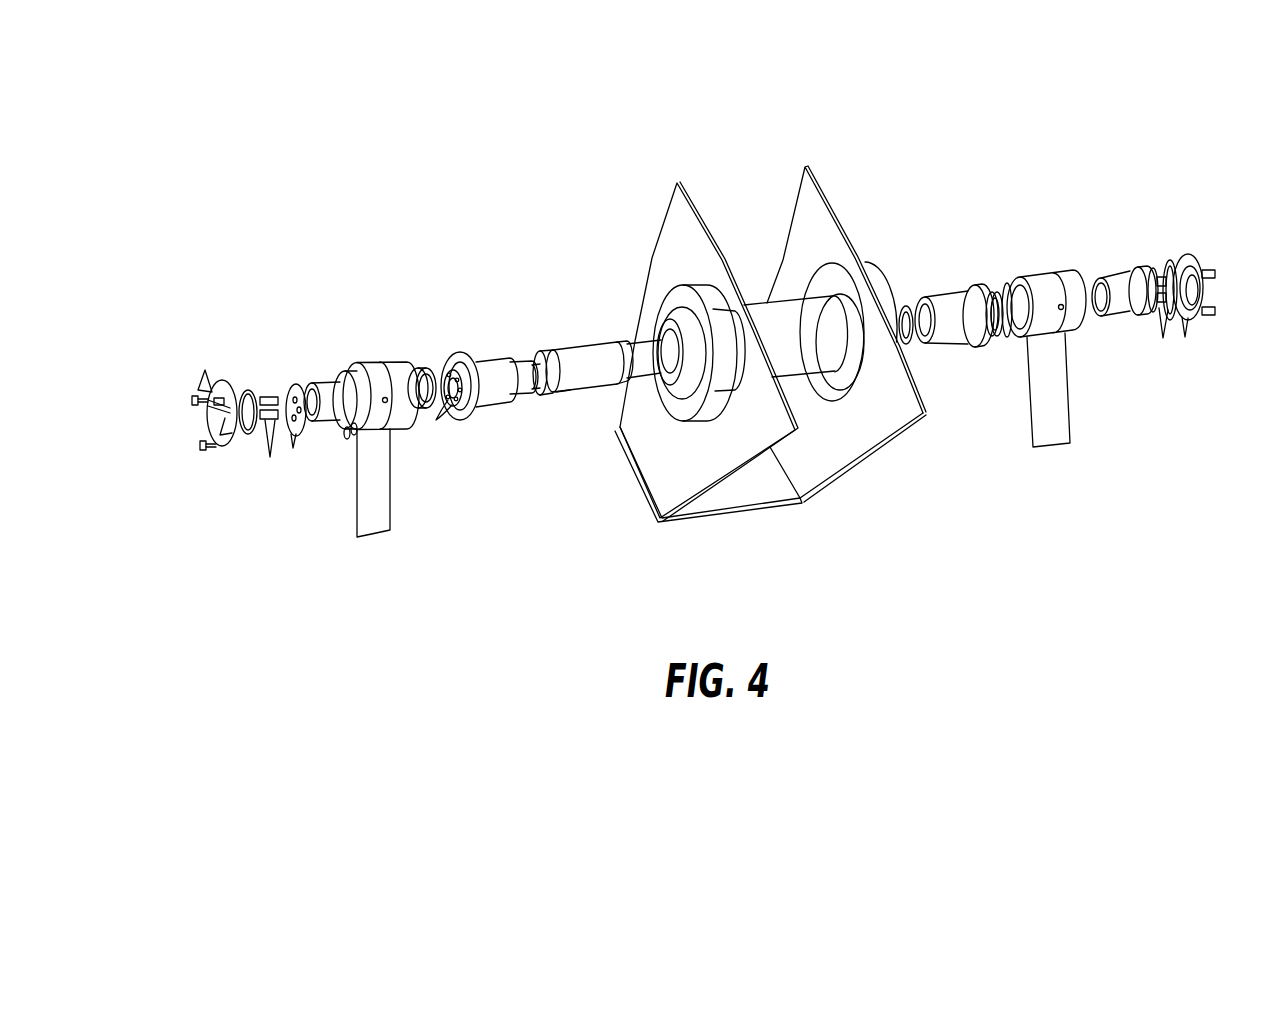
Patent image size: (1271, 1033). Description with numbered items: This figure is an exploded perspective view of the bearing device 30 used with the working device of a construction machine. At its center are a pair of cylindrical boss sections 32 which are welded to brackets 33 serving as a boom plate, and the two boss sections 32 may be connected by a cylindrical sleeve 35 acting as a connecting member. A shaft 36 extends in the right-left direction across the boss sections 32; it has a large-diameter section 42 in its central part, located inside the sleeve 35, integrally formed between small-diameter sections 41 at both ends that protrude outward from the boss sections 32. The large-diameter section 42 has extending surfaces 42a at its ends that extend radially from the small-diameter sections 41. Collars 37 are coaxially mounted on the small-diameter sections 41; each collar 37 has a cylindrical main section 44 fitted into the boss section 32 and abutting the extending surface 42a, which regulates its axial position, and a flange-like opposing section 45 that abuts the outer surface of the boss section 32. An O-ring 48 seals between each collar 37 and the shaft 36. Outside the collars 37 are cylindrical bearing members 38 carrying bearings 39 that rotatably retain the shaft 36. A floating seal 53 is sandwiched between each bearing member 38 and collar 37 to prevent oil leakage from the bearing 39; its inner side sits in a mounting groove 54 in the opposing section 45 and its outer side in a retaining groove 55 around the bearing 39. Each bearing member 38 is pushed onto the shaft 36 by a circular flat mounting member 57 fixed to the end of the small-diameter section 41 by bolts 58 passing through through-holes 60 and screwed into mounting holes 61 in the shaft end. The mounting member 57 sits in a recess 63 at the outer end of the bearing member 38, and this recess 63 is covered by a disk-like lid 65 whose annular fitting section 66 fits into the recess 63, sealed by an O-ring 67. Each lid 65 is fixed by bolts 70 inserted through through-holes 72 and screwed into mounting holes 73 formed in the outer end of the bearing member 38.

The bearing device 30 is at (756, 136).
The boss section 32 is at (670, 298).
The bracket 33 is at (680, 215).
The cylindrical sleeve 35 is at (770, 303).
The shaft 36 is at (557, 410).
The collar 37 is at (486, 346).
The bearing member 38 is at (375, 349).
The bearing 39 is at (338, 418).
The small-diameter section 41 is at (530, 365).
The large-diameter section 42 is at (582, 392).
The extending surface 42a is at (546, 352).
The main section 44 is at (492, 404).
The opposing section 45 is at (460, 352).
The O-ring 48 is at (522, 394).
The floating seal 53 is at (420, 367).
The mounting groove 54 is at (454, 406).
The retaining groove 55 is at (1008, 337).
The mounting member 57 is at (297, 384).
The bolt 58 is at (274, 425).
The through-hole 60 is at (294, 437).
The mounting hole 61 is at (437, 413).
The recess 63 is at (343, 372).
The lid 65 is at (222, 381).
The fitting section 66 is at (1188, 318).
The O-ring 67 is at (251, 390).
The bolt 70 is at (204, 392).
The through-hole 72 is at (248, 434).
The mounting hole 73 is at (349, 440).